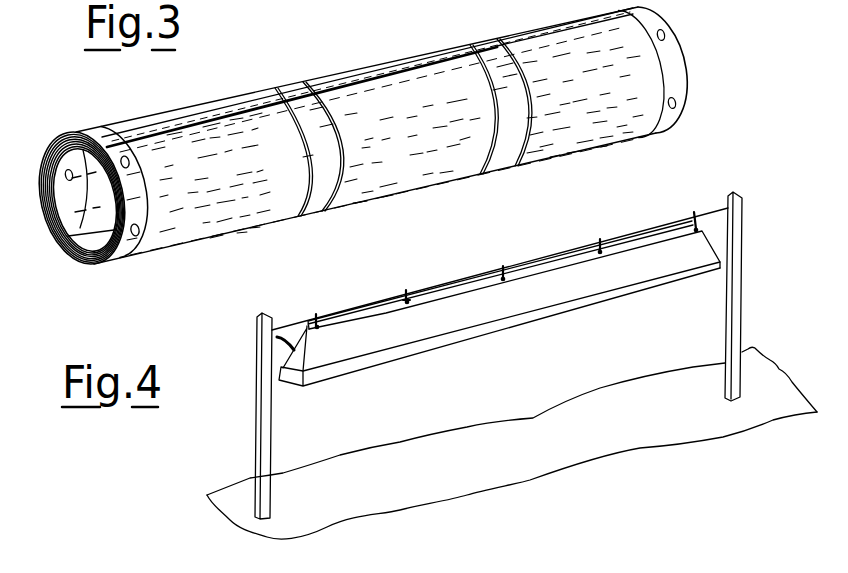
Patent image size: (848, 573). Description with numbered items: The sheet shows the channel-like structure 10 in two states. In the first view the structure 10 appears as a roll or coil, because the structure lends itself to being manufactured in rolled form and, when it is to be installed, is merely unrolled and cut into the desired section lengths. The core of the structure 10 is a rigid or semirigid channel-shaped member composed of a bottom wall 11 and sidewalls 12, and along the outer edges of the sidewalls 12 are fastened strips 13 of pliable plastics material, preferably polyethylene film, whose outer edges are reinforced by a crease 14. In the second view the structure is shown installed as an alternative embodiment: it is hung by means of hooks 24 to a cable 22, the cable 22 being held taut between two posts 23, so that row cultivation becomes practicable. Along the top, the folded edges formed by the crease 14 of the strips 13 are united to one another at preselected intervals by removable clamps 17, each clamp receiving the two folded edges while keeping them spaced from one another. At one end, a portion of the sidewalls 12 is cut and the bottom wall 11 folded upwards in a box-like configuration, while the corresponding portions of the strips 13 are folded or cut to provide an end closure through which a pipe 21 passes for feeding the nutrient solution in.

In FIG. 3, the channel-like structure 10 is at (374, 157).
In FIG. 4, the channel-like structure 10 is at (496, 304).
In FIG. 3, the bottom wall 11 is at (408, 173).
In FIG. 3, the sidewalls 12 is at (303, 197).
In FIG. 4, the sidewalls 12 is at (576, 306).
In FIG. 3, the strips 13 is at (190, 223).
In FIG. 4, the strips 13 is at (497, 303).
In FIG. 3, the crease 14 is at (125, 243).
In FIG. 4, the crease 14 is at (555, 268).
In FIG. 4, the removable clamps 17 is at (406, 301).
In FIG. 4, the pipe 21 is at (283, 336).
In FIG. 4, the cable 22 is at (450, 283).
In FIG. 4, the posts 23 is at (263, 420).
In FIG. 4, the hooks 24 is at (316, 315).